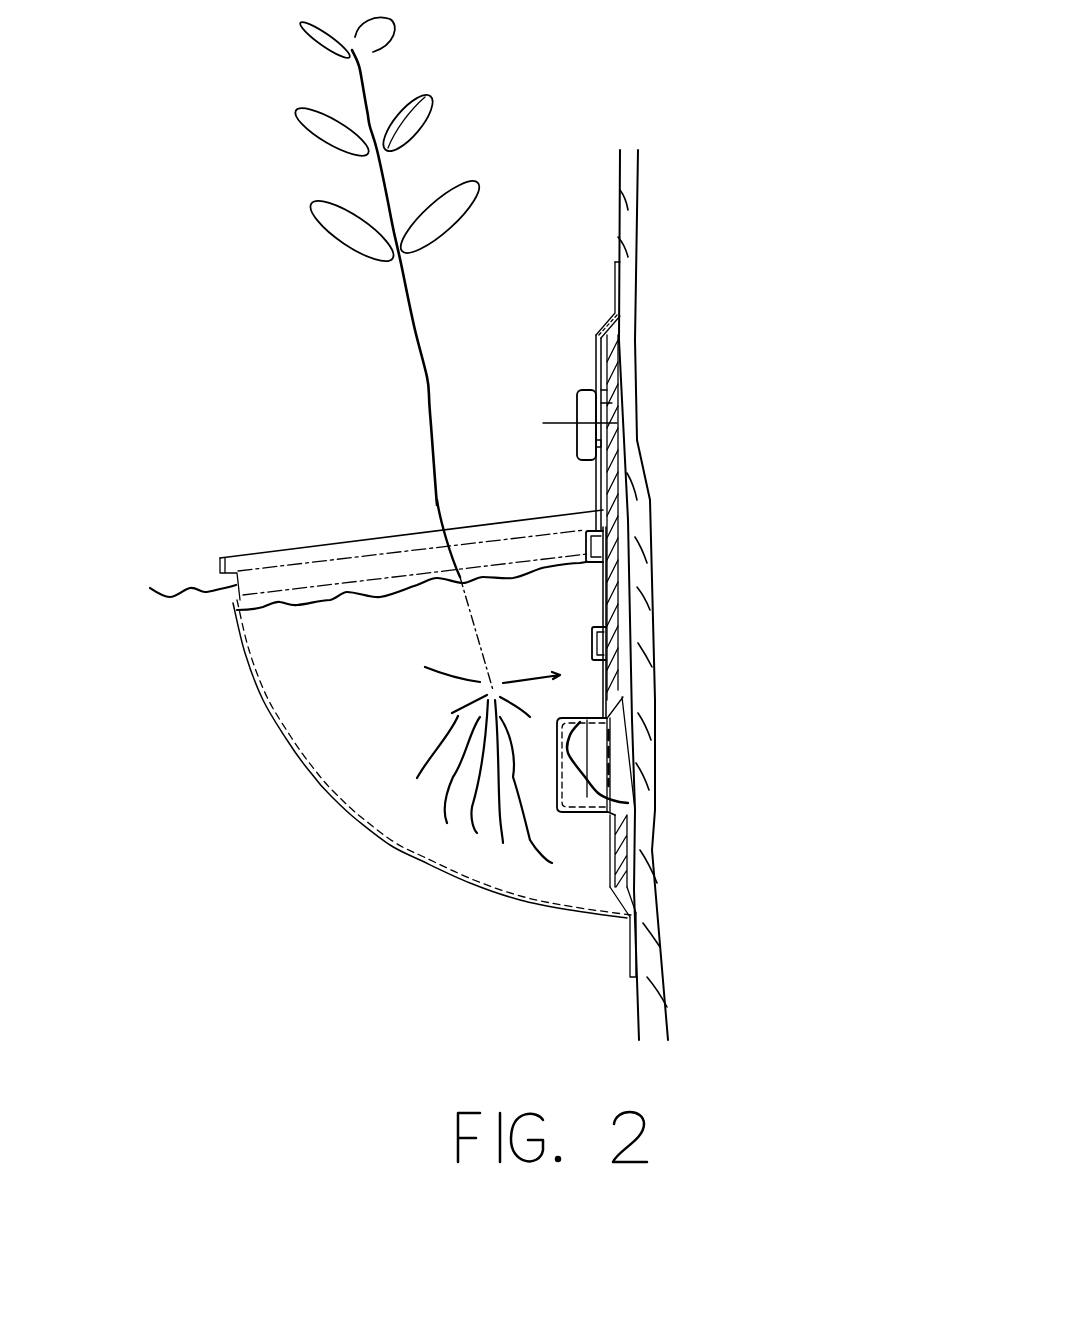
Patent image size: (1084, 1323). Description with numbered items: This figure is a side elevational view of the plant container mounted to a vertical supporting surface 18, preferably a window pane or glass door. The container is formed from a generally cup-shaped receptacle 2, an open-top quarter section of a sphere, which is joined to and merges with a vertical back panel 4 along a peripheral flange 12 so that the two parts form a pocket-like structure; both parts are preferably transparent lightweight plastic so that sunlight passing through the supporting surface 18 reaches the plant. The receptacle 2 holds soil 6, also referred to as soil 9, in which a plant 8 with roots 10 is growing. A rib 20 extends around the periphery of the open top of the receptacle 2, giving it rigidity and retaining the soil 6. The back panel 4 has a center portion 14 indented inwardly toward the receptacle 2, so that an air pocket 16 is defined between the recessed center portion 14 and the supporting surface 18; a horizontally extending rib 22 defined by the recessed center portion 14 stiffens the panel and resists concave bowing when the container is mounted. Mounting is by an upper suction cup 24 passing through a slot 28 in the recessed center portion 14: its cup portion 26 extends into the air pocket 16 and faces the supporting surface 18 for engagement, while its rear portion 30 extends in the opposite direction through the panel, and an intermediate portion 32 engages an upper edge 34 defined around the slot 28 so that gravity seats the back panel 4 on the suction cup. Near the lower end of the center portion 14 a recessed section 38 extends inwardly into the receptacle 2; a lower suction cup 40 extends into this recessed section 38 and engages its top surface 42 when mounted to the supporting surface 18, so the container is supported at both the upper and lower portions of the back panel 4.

The cup-shaped receptacle 2 is at (432, 759).
The back panel 4 is at (420, 422).
The soil 6 is at (420, 546).
The plant 8 is at (436, 261).
The soil 9 is at (698, 890).
The roots 10 is at (462, 813).
The flange 12 is at (576, 968).
The center portion 14 is at (524, 649).
The air pocket 16 is at (700, 286).
The vertical supporting surface 18 is at (664, 595).
The rib 20 is at (155, 583).
The horizontally extending rib 22 is at (625, 547).
The upper suction cup 24 is at (677, 517).
The cup portion 26 is at (684, 409).
The slot 28 is at (708, 363).
The rear portion 30 is at (543, 414).
The intermediate portion 32 is at (550, 408).
The upper edge 34 is at (749, 321).
The recessed section 38 is at (400, 813).
The lower suction cup 40 is at (686, 737).
The top surface 42 is at (668, 768).